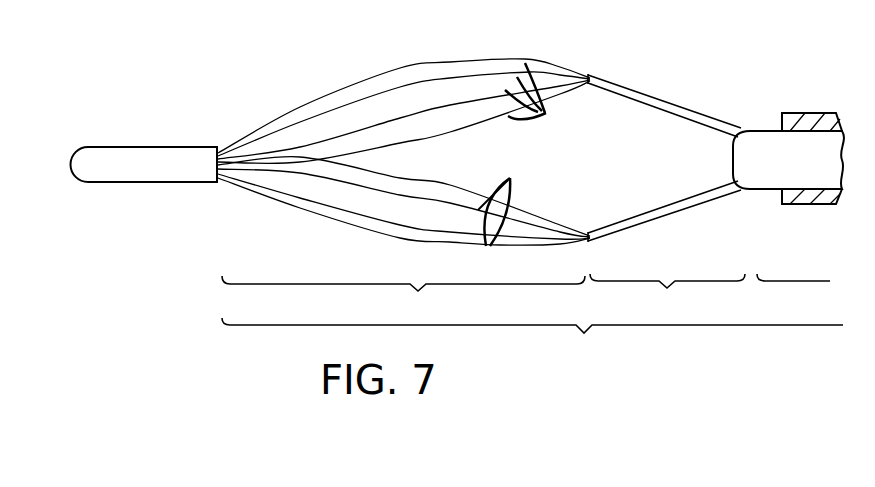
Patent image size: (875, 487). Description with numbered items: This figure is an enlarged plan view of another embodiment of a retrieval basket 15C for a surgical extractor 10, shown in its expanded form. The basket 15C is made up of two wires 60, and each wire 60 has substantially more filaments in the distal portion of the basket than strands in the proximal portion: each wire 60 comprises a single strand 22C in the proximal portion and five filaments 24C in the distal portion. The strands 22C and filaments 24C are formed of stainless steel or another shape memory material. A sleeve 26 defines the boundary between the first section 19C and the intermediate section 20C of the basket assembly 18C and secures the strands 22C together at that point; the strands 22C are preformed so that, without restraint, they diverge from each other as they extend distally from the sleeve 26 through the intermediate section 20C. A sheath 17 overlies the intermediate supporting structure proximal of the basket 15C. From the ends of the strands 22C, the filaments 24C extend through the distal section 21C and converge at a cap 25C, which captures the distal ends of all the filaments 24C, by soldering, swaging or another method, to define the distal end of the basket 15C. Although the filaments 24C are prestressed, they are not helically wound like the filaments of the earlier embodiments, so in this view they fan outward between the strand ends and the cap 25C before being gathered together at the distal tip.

The surgical extractor 10 is at (680, 90).
The retrieval basket 15C is at (441, 63).
The sheath 17 is at (814, 113).
The basket assembly 18C is at (532, 340).
The first section 19C is at (801, 296).
The intermediate section 20C is at (667, 295).
The distal section 21C is at (403, 296).
The strand 22C is at (663, 110).
The filaments 24C is at (534, 154).
The cap 25C is at (169, 147).
The sleeve 26 is at (761, 130).
The wires 60 is at (624, 83).